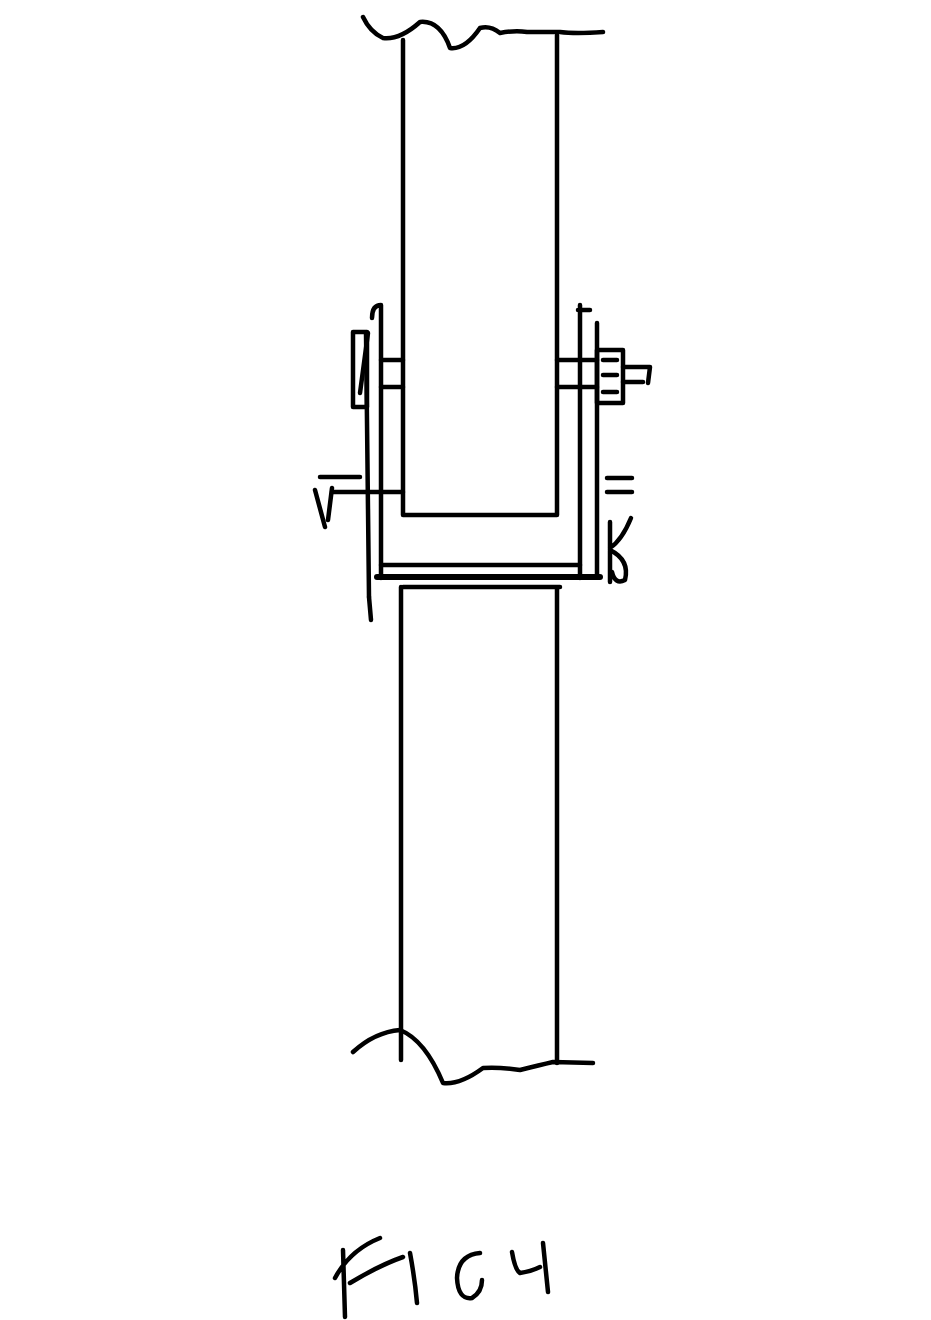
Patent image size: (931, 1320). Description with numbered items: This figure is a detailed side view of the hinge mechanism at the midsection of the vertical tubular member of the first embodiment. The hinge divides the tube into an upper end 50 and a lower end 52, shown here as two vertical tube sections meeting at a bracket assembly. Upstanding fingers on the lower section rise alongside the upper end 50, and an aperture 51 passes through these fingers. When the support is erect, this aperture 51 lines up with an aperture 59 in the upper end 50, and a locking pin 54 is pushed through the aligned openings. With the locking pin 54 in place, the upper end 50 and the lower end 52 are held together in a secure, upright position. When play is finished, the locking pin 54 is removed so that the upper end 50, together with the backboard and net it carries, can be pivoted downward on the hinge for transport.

The upper end of vertical tubular member 50 is at (388, 123).
The lower end of vertical tubular member 52 is at (383, 880).
The aperture 51 is at (360, 493).
The locking pin 54 is at (317, 493).
The aperture in upper end 59 is at (371, 600).